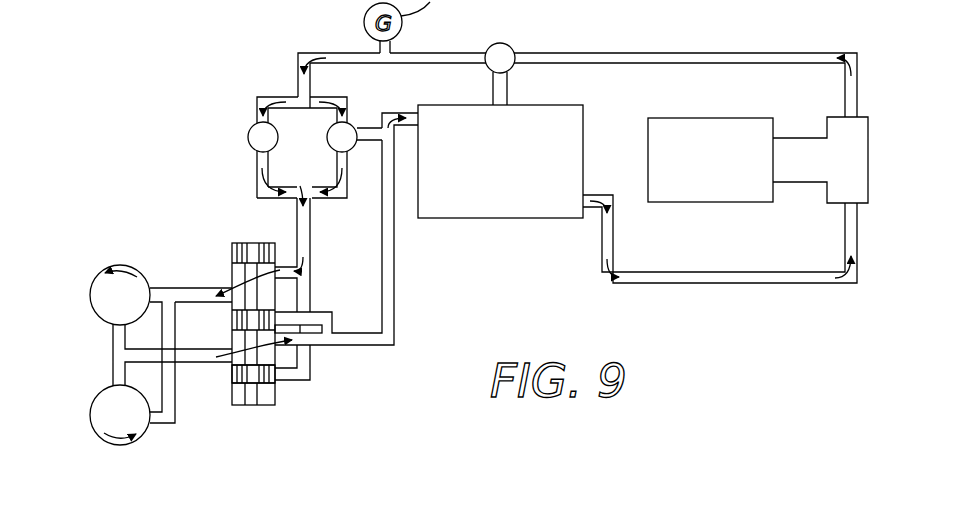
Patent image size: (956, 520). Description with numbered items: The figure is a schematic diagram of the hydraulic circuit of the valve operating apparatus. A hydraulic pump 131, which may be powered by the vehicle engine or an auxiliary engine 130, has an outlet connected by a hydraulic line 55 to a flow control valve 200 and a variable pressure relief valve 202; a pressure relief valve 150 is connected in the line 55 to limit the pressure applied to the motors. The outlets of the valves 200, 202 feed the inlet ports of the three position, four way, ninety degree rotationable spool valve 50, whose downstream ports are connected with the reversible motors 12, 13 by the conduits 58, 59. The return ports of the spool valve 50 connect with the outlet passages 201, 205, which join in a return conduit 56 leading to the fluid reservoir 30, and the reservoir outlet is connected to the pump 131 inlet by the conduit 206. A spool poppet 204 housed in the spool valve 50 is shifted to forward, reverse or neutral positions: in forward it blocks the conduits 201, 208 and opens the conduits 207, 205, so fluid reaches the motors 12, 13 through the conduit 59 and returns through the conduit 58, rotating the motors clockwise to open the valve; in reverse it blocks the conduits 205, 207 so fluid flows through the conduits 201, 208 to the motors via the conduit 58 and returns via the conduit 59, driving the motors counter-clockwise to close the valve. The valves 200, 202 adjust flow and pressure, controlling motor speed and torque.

The reversible motor 12 is at (111, 264).
The reversible motor 13 is at (90, 421).
The fluid reservoir 30 is at (502, 222).
The spool valve 50 is at (234, 405).
The hydraulic line 55 is at (680, 52).
The return conduit 56 is at (362, 143).
The conduit 58 is at (186, 287).
The conduit 59 is at (200, 363).
The engine 130 is at (695, 206).
The hydraulic pump 131 is at (802, 183).
The pressure relief valve 150 is at (509, 44).
The flow control valve 200 is at (248, 137).
The outlet passage 201 is at (325, 347).
The variable pressure relief valve 202 is at (354, 126).
The spool poppet 204 is at (259, 383).
The outlet passage 205 is at (333, 312).
The conduit 206 is at (777, 283).
The conduit 207 is at (305, 382).
The conduit 208 is at (288, 266).